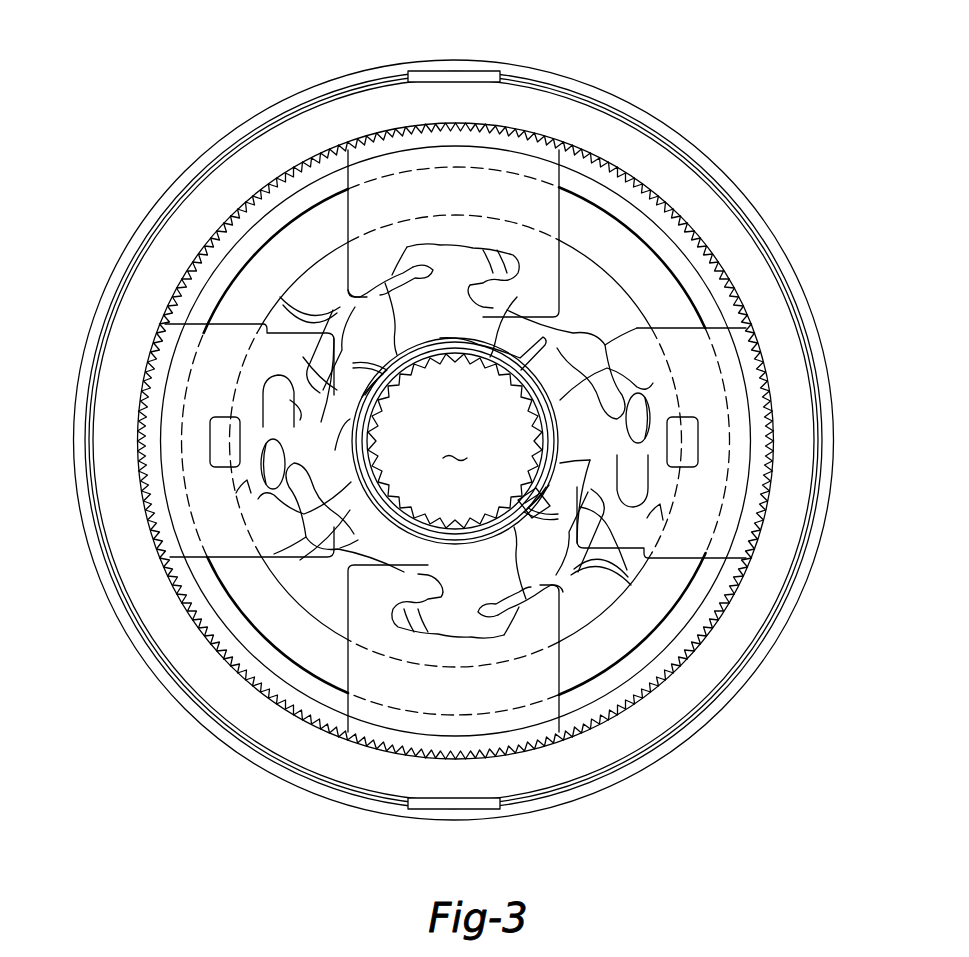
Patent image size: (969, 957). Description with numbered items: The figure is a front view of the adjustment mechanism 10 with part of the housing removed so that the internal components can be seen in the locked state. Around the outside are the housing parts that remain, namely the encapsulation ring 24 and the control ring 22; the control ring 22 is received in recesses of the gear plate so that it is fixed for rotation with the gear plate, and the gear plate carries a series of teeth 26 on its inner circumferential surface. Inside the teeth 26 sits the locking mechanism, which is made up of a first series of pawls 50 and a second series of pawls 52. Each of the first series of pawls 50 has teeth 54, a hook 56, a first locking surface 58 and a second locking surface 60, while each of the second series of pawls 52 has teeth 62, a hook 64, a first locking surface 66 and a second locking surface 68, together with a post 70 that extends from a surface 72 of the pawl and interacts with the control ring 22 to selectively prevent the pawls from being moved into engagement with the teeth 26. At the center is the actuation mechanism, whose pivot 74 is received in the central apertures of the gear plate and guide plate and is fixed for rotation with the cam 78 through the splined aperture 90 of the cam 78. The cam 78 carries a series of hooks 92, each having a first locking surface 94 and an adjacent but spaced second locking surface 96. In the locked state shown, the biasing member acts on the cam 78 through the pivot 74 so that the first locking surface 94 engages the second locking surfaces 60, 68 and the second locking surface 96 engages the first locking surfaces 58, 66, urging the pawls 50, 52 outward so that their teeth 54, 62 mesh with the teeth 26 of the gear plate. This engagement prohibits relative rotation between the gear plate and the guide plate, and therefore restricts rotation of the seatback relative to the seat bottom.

The adjustment mechanism 10 is at (686, 99).
The control ring 22 is at (262, 267).
The encapsulation ring 24 is at (362, 70).
The teeth 26 is at (443, 127).
The first series of pawls 50 is at (499, 208).
The second series of pawls 52 is at (180, 360).
The teeth 54 is at (393, 122).
The hook 56 is at (487, 290).
The first locking surface 58 is at (485, 380).
The second locking surface 60 is at (390, 373).
The teeth 62 is at (190, 503).
The hook 64 is at (300, 407).
The first locking surface 66 is at (380, 430).
The second locking surface 68 is at (530, 417).
The post 70 is at (217, 453).
The surface 72 is at (243, 493).
The pivot 74 is at (456, 443).
The cam 78 is at (350, 543).
The splined aperture 90 is at (362, 457).
The hooks 92 is at (430, 277).
The first locking surface 94 is at (385, 283).
The second locking surface 96 is at (303, 357).